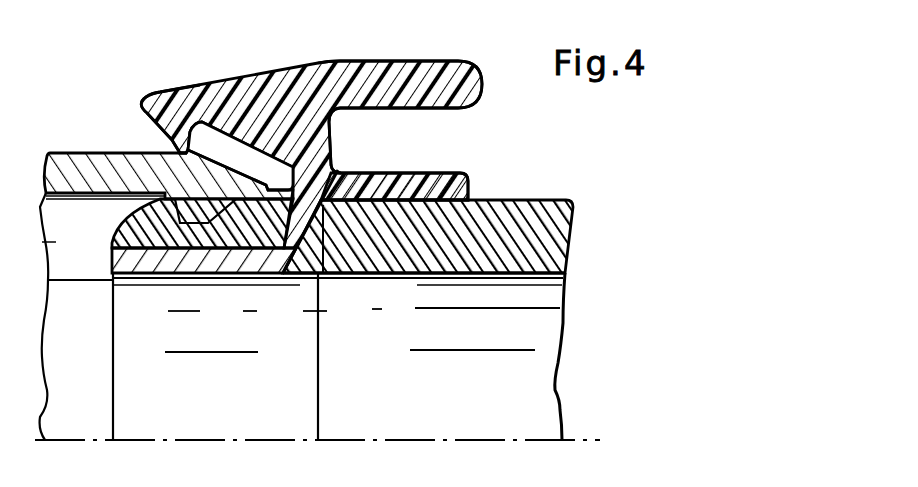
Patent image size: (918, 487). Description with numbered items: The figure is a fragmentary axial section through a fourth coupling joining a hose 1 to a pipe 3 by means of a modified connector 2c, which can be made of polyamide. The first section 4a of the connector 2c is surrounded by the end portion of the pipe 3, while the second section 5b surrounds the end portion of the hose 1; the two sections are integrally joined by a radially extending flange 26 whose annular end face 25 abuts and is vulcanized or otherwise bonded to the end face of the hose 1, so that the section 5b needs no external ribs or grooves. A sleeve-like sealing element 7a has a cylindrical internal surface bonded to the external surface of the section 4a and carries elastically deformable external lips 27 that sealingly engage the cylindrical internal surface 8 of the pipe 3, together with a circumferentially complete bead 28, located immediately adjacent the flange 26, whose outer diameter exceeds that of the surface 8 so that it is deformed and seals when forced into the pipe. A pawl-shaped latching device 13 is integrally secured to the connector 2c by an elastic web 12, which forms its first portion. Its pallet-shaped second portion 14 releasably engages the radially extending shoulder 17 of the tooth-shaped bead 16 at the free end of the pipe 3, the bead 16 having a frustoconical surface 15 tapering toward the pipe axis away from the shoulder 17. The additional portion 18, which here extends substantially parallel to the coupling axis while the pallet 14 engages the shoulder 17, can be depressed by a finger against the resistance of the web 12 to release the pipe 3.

The hose 1 is at (543, 199).
The connector 2c is at (286, 278).
The pipe 3 is at (72, 146).
The first section 4a is at (153, 281).
The second section 5b is at (442, 173).
The sealing element 7a is at (116, 235).
The internal surface 8 is at (42, 207).
The web 12 is at (330, 144).
The latching device 13 is at (215, 76).
The pallet-shaped second portion 14 is at (162, 108).
The frustoconical surface 15 is at (248, 157).
The bead 16 is at (181, 128).
The shoulder 17 is at (176, 147).
The additional portion 18 is at (429, 60).
The annular end face 25 is at (336, 277).
The flange 26 is at (376, 276).
The external lips 27 is at (158, 201).
The bead 28 is at (268, 190).